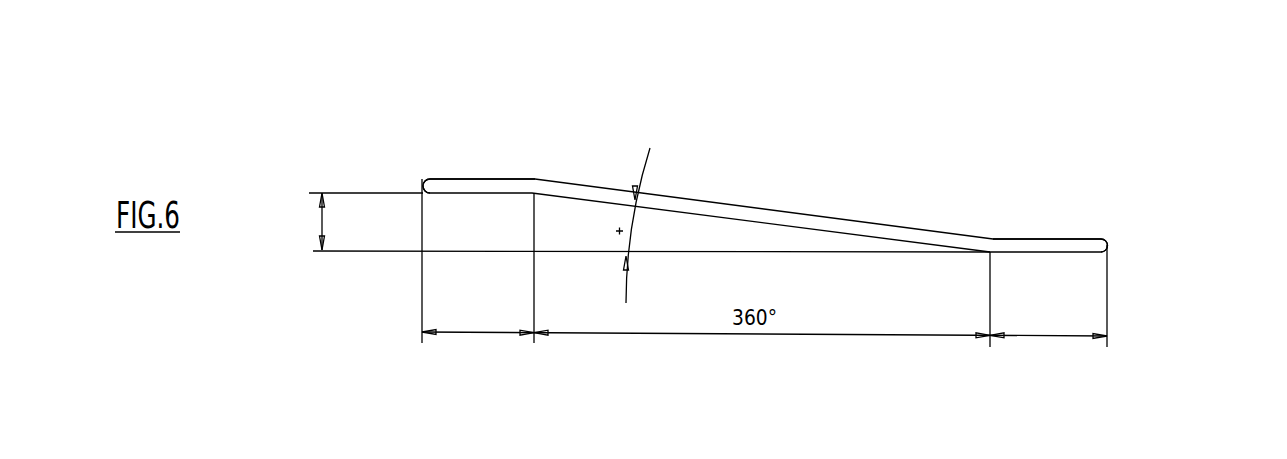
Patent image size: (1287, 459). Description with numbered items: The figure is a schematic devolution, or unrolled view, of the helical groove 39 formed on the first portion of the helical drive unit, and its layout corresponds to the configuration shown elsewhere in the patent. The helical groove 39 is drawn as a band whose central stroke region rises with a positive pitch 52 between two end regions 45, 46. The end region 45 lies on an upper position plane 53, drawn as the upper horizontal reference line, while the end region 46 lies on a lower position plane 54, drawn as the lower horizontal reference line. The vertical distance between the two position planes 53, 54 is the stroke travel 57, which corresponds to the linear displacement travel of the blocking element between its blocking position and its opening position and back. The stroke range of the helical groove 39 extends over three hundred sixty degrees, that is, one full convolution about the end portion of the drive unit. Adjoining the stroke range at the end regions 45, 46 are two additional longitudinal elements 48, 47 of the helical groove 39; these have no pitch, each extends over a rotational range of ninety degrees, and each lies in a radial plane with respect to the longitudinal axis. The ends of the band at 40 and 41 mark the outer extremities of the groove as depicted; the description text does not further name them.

The helical groove 39 is at (687, 205).
The first end of strip 40 is at (423, 179).
The second end of strip 41 is at (1104, 244).
The end region 45 is at (482, 186).
The end region 46 is at (1027, 247).
The positive pitch 52 is at (635, 198).
The upper position plane 53 is at (348, 193).
The lower position plane 54 is at (390, 251).
The stroke travel 57 is at (313, 251).
The additional longitudinal element 48 is at (455, 332).
The additional longitudinal element 47 is at (1038, 337).